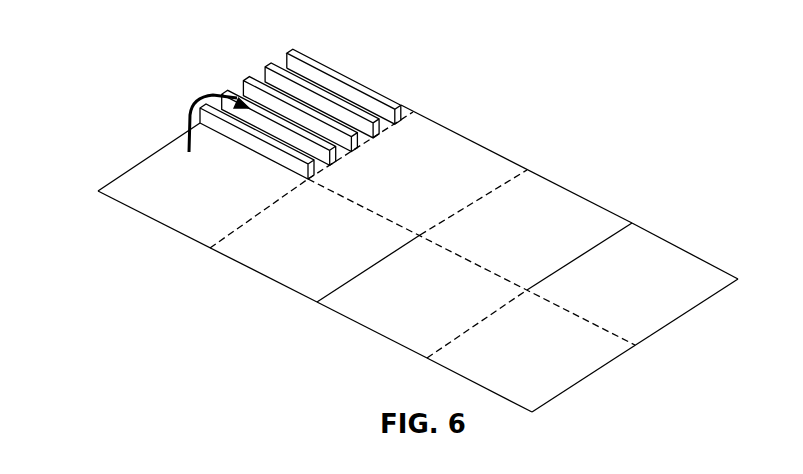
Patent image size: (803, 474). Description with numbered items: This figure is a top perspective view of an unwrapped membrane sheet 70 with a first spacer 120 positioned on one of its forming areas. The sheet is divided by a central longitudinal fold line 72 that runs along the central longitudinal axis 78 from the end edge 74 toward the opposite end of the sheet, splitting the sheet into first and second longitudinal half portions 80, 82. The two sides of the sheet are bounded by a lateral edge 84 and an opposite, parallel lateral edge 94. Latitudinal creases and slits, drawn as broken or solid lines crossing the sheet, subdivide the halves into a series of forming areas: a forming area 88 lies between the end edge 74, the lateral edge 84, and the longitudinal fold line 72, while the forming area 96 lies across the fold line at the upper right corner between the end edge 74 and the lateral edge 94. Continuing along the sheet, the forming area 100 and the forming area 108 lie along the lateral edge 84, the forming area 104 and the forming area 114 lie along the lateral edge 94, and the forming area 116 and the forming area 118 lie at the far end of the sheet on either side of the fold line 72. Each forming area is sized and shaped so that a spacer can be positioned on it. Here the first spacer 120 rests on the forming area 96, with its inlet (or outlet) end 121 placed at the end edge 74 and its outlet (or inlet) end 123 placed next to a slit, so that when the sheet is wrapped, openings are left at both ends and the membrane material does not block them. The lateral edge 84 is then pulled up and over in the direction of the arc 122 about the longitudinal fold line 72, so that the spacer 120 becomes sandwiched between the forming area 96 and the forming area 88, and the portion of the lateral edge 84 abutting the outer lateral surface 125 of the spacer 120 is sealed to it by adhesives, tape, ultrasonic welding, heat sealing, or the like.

The unwrapped membrane sheet 70 is at (150, 240).
The central longitudinal fold line 72 is at (442, 246).
The end edge 74 is at (142, 161).
The central longitudinal axis 78 is at (634, 347).
The first longitudinal half portion 80 is at (577, 385).
The second longitudinal half portion 82 is at (683, 316).
The lateral edge 84 is at (105, 197).
The forming area 88 is at (195, 193).
The lateral edge 94 is at (365, 86).
The forming area 96 is at (381, 137).
The forming area 100 is at (293, 246).
The forming area 104 is at (403, 190).
The forming area 108 is at (402, 306).
The forming area 114 is at (507, 235).
The forming area 116 is at (512, 356).
The forming area 118 is at (615, 296).
The first spacer 120 is at (326, 91).
The inlet end 121 is at (287, 55).
The arc 122 is at (192, 116).
The outlet end 123 is at (405, 116).
The outer lateral surface 125 is at (316, 60).